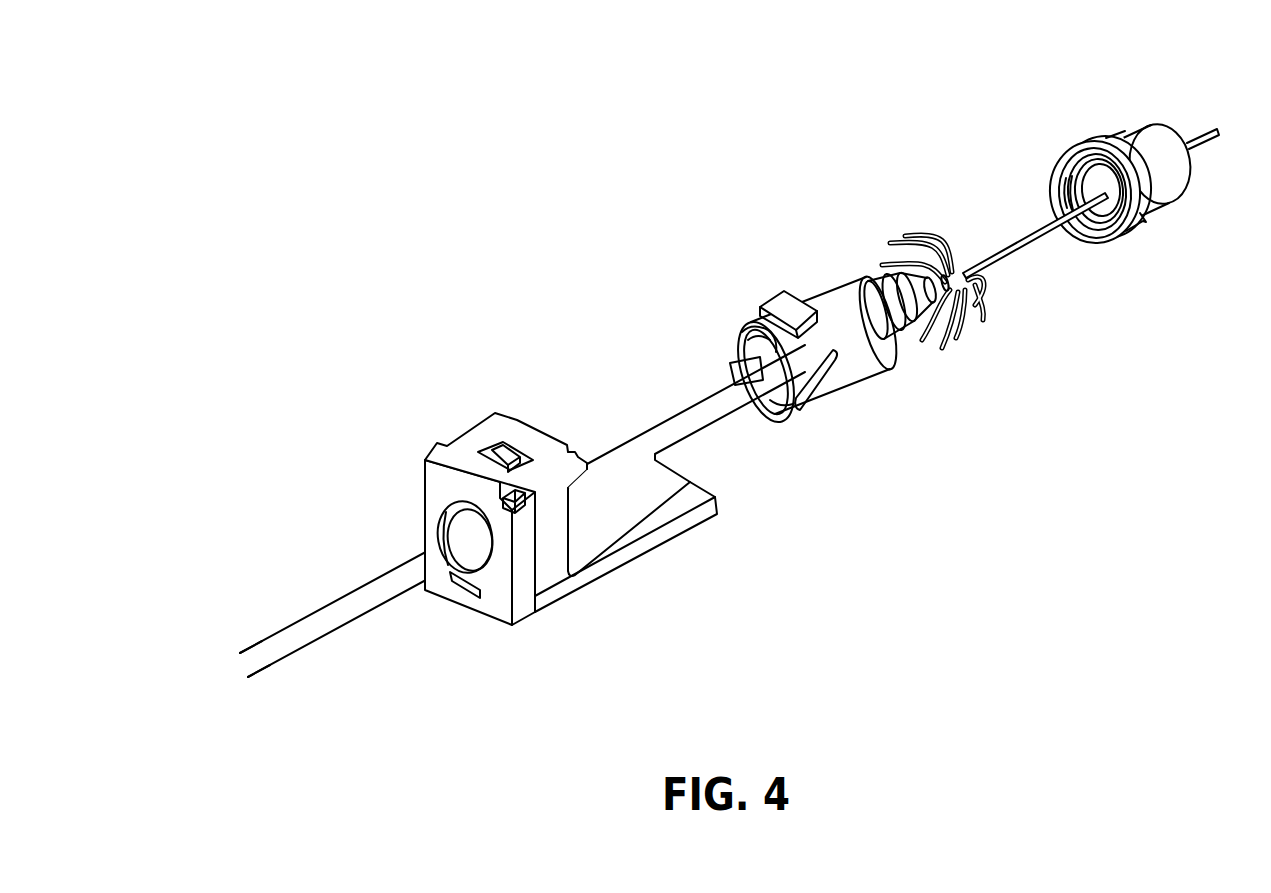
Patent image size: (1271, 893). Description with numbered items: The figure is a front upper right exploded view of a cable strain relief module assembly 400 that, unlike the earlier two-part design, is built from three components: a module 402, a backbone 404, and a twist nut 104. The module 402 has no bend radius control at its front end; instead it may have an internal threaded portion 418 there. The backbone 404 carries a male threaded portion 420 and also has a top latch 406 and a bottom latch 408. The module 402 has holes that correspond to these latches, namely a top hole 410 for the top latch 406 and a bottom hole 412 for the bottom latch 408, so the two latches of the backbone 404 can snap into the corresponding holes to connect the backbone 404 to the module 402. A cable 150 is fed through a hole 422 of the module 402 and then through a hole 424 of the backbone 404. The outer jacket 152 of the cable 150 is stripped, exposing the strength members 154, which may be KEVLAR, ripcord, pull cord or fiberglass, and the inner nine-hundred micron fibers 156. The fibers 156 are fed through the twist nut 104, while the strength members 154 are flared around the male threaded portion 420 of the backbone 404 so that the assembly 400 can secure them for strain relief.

The cable strain relief module assembly 400 is at (316, 118).
The module 402 is at (518, 627).
The backbone 404 is at (860, 381).
The top latch 406 is at (777, 300).
The bottom latch 408 is at (803, 417).
The top hole 410 is at (497, 452).
The bottom hole 412 is at (560, 603).
The internal threaded portion 418 is at (470, 563).
The male threaded portion 420 is at (865, 285).
The hole 422 is at (465, 513).
The hole 424 is at (777, 352).
The cable 150 is at (236, 670).
The outer jacket 152 is at (663, 428).
The strength members 154 is at (985, 308).
The 900 micron fibers 156 is at (1030, 227).
The twist nut 104 is at (1162, 201).